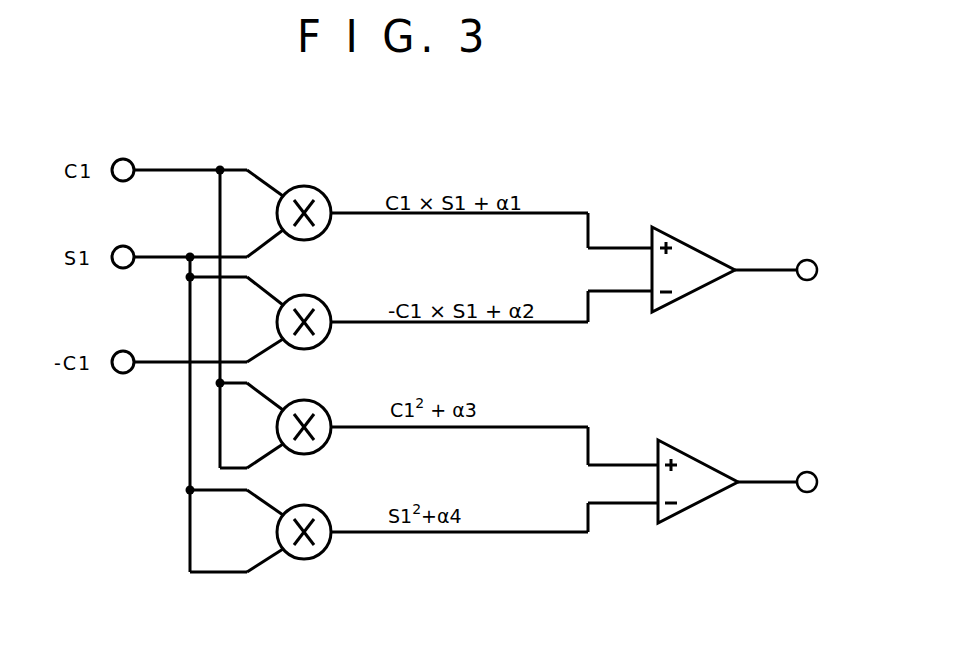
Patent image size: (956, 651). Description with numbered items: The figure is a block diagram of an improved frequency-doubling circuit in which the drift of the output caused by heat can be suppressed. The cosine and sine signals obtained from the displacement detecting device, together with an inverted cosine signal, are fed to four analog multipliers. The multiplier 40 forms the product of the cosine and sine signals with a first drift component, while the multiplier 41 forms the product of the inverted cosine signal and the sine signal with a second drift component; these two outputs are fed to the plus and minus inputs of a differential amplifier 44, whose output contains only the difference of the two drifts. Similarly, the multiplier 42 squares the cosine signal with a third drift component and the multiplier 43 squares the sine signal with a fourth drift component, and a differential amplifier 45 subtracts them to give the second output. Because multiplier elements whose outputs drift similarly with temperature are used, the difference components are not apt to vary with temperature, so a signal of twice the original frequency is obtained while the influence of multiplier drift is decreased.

The multiplier 40 is at (320, 185).
The multiplier 41 is at (320, 294).
The multiplier 42 is at (323, 399).
The multiplier 43 is at (318, 505).
The differential amplifier 44 is at (703, 249).
The differential amplifier 45 is at (707, 461).